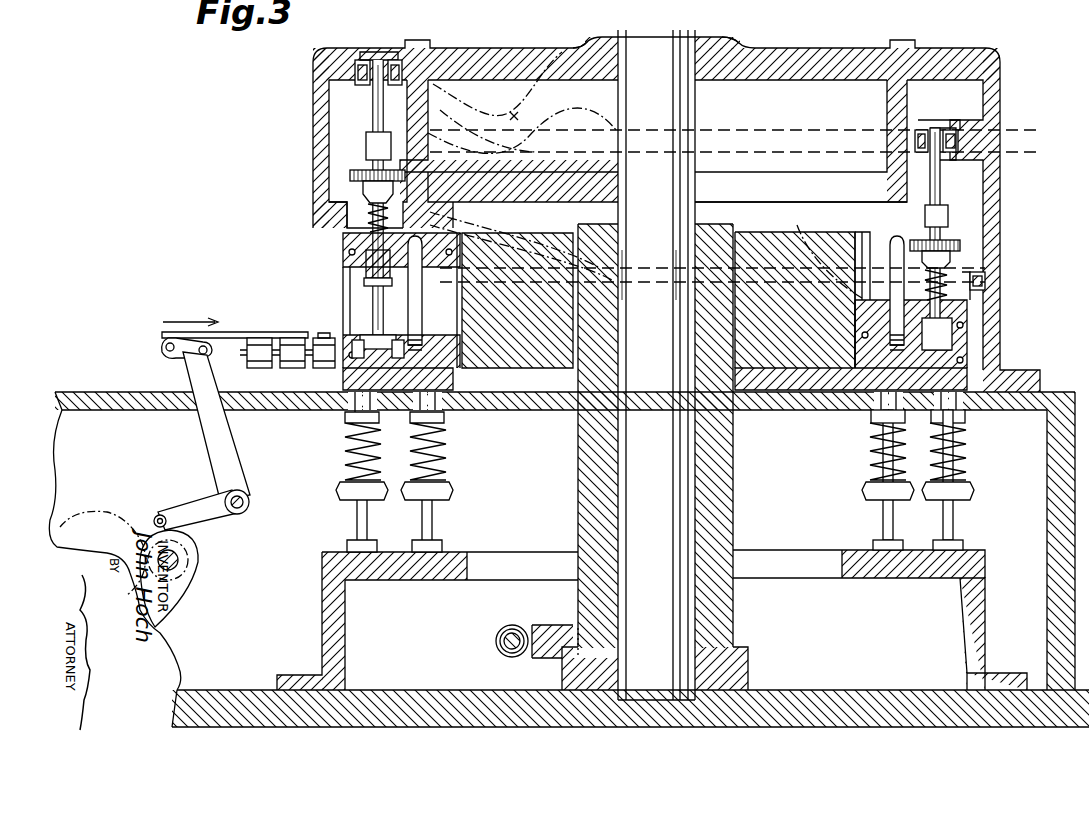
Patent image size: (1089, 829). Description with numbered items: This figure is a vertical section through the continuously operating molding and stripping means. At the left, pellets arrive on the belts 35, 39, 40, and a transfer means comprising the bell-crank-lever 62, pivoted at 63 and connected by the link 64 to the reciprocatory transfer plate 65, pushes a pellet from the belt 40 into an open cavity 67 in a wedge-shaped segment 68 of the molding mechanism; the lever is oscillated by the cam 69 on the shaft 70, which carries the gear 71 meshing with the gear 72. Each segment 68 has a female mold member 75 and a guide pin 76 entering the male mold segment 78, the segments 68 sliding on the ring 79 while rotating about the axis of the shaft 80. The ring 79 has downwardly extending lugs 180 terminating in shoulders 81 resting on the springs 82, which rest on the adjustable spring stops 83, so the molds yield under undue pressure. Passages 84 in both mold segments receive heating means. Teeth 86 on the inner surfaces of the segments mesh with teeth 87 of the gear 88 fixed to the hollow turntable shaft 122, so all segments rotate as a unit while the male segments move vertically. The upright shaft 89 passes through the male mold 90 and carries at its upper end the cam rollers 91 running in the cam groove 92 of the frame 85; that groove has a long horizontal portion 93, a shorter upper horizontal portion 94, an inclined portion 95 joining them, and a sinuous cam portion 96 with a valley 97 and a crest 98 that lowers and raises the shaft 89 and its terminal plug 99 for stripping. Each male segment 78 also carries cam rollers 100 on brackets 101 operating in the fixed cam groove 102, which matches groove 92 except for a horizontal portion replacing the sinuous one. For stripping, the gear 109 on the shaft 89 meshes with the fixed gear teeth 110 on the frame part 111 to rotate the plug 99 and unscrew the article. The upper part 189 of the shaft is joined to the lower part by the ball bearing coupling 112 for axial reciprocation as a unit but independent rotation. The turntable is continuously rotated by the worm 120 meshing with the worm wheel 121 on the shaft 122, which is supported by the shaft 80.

The belt 35 is at (255, 370).
The belt 39 is at (290, 370).
The belt 40 is at (322, 370).
The bell-crank-lever 62 is at (240, 468).
The pivot 63 is at (250, 500).
The link 64 is at (185, 362).
The reciprocatory transfer plate 65 is at (237, 330).
The open cavity 67 is at (343, 300).
The wedge-shaped segment 68 is at (952, 348).
The cam 69 is at (195, 598).
The shaft 70 is at (178, 560).
The gear 71 is at (188, 552).
The gear 72 is at (122, 514).
The female mold member 75 is at (365, 345).
The guide pin 76 is at (422, 297).
The male mold segment 78 is at (345, 240).
The ring 79 is at (856, 410).
The shaft 80 is at (670, 680).
The shoulders 81 is at (956, 430).
The springs 82 is at (966, 470).
The adjustable spring stops 83 is at (972, 495).
The passages 84 is at (345, 262).
The frame 85 is at (1000, 148).
The teeth 86 is at (450, 345).
The teeth 87 is at (852, 232).
The gear 88 is at (750, 232).
The upright shaft 89 is at (950, 235).
The male mold 90 is at (340, 232).
The cam rollers 91 is at (400, 58).
The cam groove 92 is at (960, 148).
The horizontal portion 93 is at (788, 132).
The second horizontal portion 94 is at (376, 50).
The inclined portion 95 is at (455, 136).
The cam portion 96 is at (520, 62).
The valley 97 is at (535, 118).
The crest 98 is at (576, 47).
The terminal plug 99 is at (378, 282).
The cam rollers 100 is at (985, 280).
The brackets 101 is at (975, 270).
The fixed cam groove 102 is at (654, 270).
The gear 109 is at (350, 178).
The fixed gear teeth 110 is at (366, 150).
The frame part 111 is at (532, 186).
The ball bearing coupling 112 is at (950, 212).
The worm 120 is at (498, 648).
The worm wheel 121 is at (760, 630).
The hollow turntable shaft 122 is at (735, 512).
The lugs 180 is at (965, 415).
The upper part of shaft 189 is at (373, 115).